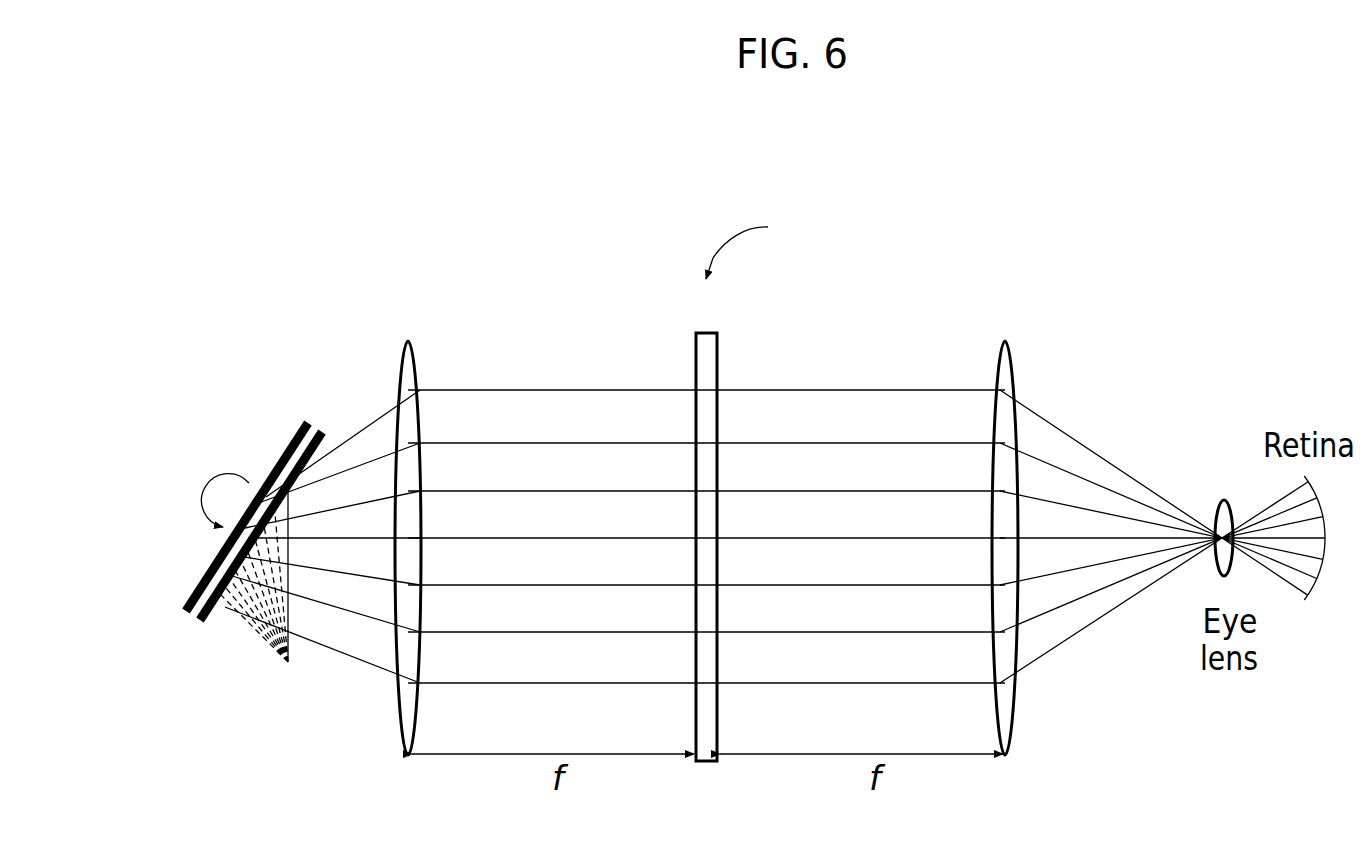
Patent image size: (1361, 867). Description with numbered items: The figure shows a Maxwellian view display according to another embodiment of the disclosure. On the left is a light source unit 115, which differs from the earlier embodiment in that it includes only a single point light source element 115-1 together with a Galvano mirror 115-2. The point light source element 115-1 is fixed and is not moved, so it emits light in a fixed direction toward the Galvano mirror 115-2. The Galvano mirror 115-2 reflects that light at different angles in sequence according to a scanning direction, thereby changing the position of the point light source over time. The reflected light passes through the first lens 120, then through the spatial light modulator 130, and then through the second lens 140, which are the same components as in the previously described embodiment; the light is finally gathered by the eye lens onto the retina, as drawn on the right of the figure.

The light source unit 115 is at (196, 628).
The point light source element 115-1 is at (279, 659).
The Galvano mirror 115-2 is at (186, 604).
The lens-1 120 is at (409, 377).
The spatial light modulator 130 is at (708, 378).
The lens-2 140 is at (1008, 373).